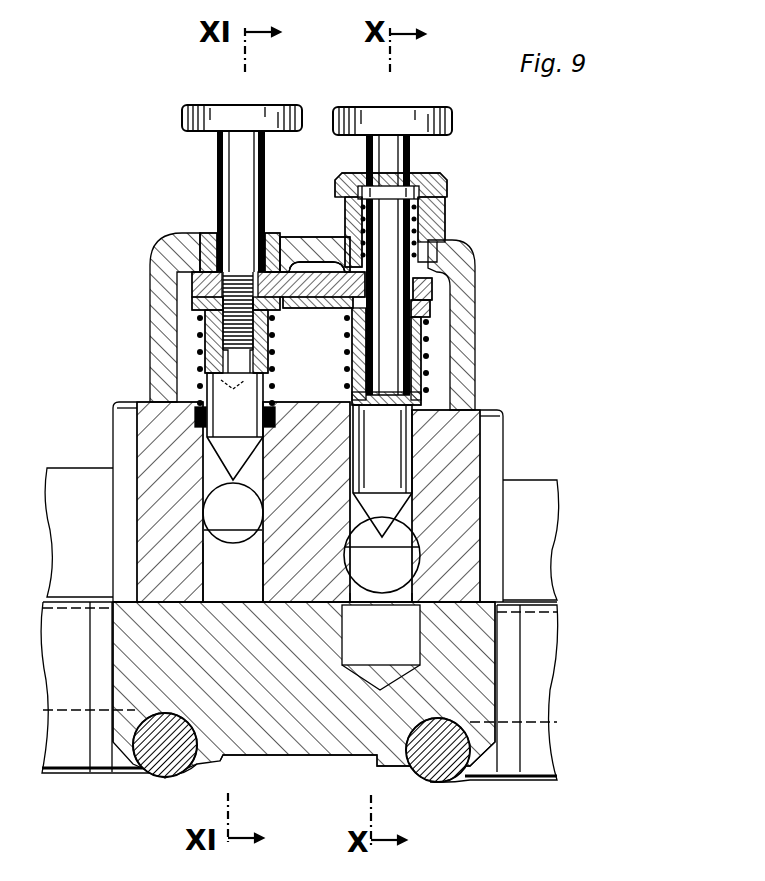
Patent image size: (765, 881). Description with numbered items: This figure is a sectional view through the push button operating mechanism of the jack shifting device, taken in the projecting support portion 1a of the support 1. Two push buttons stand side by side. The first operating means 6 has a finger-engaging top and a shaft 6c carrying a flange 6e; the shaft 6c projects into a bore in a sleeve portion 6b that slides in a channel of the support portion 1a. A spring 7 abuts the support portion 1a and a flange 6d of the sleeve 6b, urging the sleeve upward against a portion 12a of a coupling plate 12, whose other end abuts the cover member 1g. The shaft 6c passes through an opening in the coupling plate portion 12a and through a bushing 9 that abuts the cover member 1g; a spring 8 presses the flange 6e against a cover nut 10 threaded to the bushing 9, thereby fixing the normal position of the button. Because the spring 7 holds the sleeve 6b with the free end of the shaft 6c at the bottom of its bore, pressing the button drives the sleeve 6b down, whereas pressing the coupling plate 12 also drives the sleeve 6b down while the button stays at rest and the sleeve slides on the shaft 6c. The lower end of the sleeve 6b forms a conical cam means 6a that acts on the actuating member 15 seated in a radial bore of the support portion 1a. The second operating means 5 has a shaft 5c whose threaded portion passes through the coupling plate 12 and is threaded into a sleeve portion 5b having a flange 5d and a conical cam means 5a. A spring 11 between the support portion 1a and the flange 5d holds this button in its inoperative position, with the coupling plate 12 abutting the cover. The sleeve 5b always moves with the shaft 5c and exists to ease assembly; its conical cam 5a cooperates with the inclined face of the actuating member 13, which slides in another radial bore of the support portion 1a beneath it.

The support 1 is at (522, 471).
The projecting support portion 1a is at (476, 411).
The cover member 1g is at (455, 255).
The second operating means 5 is at (201, 104).
The conical cam means 5a is at (218, 470).
The sleeve portion 5b is at (242, 417).
The shaft 5c is at (222, 160).
The flange 5d is at (195, 299).
The first operating means 6 is at (360, 106).
The conical cam means 6a is at (372, 533).
The sleeve portion 6b is at (389, 464).
The shaft 6c is at (418, 164).
The flange 6d is at (432, 312).
The flange 6e is at (346, 194).
The spring 7 is at (345, 335).
The spring 8 is at (440, 216).
The bushing 9 is at (340, 283).
The cover nut 10 is at (338, 180).
The spring 11 is at (274, 395).
The coupling plate 12 is at (200, 285).
The coupling plate portion 12a is at (433, 290).
The actuating member 13 is at (242, 535).
The actuating member 15 is at (390, 580).